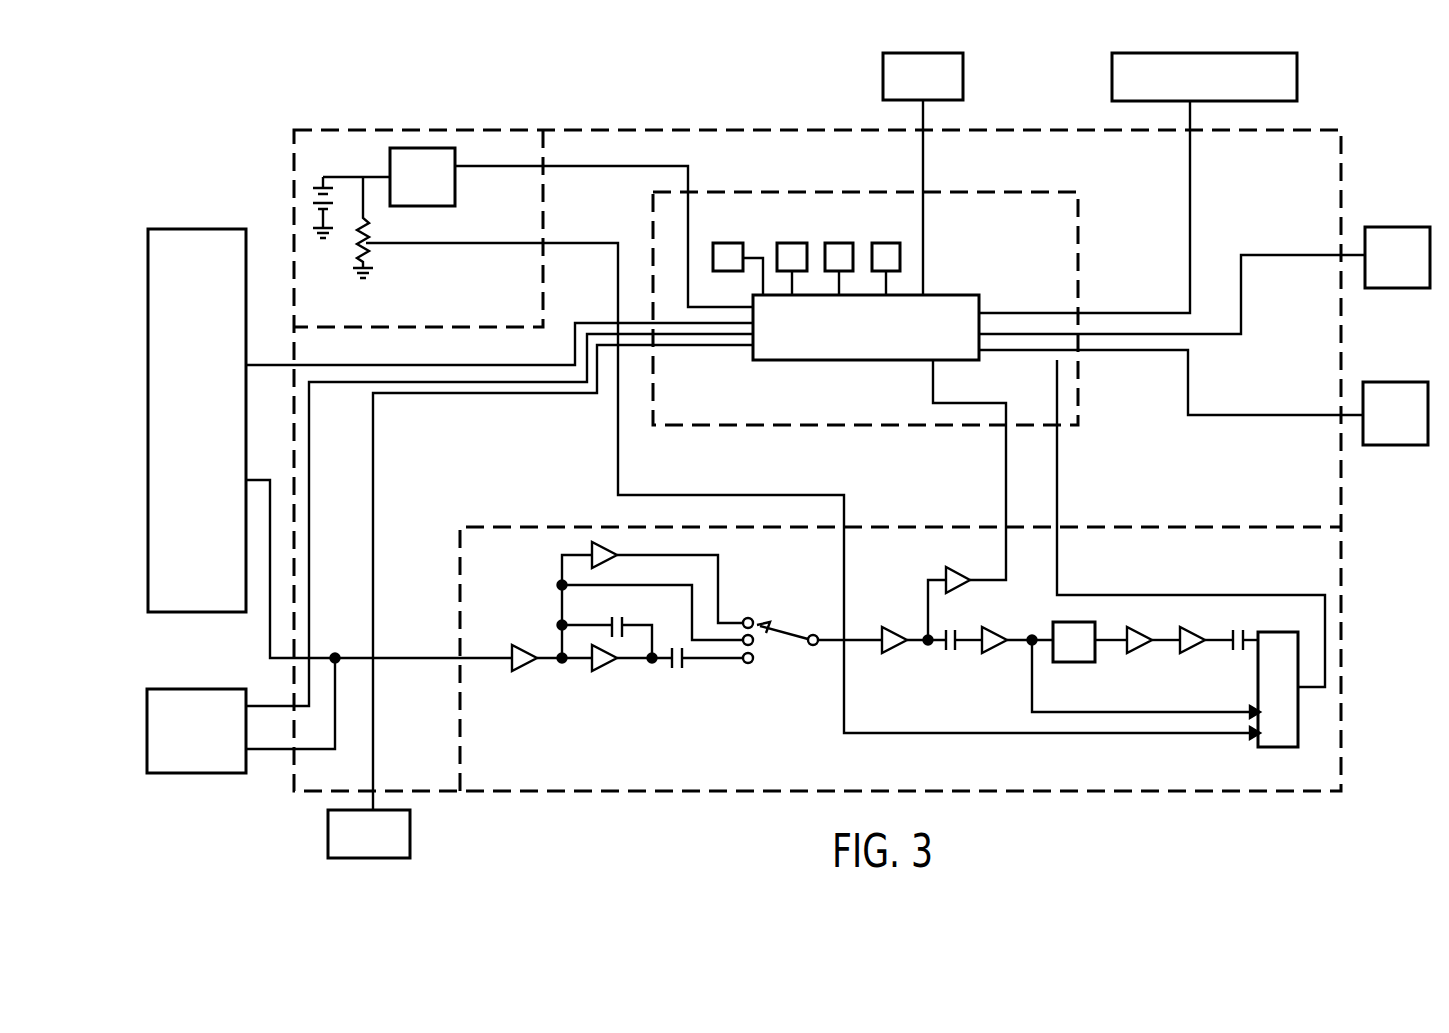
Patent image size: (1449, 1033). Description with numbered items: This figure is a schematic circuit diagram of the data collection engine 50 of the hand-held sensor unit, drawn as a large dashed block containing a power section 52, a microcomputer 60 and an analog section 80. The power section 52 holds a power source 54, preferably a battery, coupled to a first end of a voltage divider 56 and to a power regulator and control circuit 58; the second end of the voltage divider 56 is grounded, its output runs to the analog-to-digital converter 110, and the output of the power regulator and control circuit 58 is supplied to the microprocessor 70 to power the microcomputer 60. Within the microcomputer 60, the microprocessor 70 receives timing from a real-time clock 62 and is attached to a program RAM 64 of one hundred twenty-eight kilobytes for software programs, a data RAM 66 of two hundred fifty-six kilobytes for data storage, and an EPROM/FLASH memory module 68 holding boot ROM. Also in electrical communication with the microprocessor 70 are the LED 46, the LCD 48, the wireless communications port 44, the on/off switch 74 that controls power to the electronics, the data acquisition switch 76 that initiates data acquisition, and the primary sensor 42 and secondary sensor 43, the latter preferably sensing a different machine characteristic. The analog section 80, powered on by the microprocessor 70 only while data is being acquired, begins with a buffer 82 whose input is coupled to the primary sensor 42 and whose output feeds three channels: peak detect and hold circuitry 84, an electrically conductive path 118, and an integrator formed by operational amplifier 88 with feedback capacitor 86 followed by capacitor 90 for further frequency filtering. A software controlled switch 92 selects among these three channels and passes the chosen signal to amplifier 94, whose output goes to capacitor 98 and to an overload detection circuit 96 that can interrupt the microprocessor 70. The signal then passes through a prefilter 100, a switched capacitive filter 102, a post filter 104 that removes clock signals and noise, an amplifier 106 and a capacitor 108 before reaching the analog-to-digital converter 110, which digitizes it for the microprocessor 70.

The primary sensor 42 is at (178, 229).
The secondary sensor 43 is at (177, 688).
The wireless communications port 44 is at (410, 830).
The LED 46 is at (963, 88).
The LCD 48 is at (1297, 90).
The data collection engine 50 is at (704, 92).
The power section 52 is at (431, 115).
The power source 54 is at (322, 183).
The voltage divider 56 is at (366, 245).
The power regulator and control circuit 58 is at (455, 157).
The microcomputer 60 is at (814, 189).
The real-time clock 62 is at (732, 243).
The 128 KB RAM 64 is at (795, 243).
The 256 KB RAM 66 is at (842, 243).
The EPROM/FLASH memory module 68 is at (886, 243).
The microprocessor 70 is at (963, 295).
The on/off switch 74 is at (1398, 289).
The data acquisition switch 76 is at (1395, 446).
The analog section 80 is at (569, 518).
The buffer 82 is at (517, 670).
The peak detect and hold circuitry 84 is at (592, 553).
The feedback capacitor 86 is at (625, 617).
The operational amplifier 88 is at (608, 670).
The capacitor 90 is at (688, 667).
The software controlled switch 92 is at (768, 626).
The amplifier 94 is at (902, 655).
The overload detection circuit 96 is at (956, 570).
The capacitor 98 is at (955, 653).
The prefilter 100 is at (1003, 627).
The switched capacitive filter 102 is at (1077, 662).
The post filter 104 is at (1142, 653).
The amplifier 106 is at (1195, 653).
The capacitor 108 is at (1233, 630).
The analog-to-digital converter 110 is at (1270, 747).
The electrically conductive path 118 is at (650, 586).